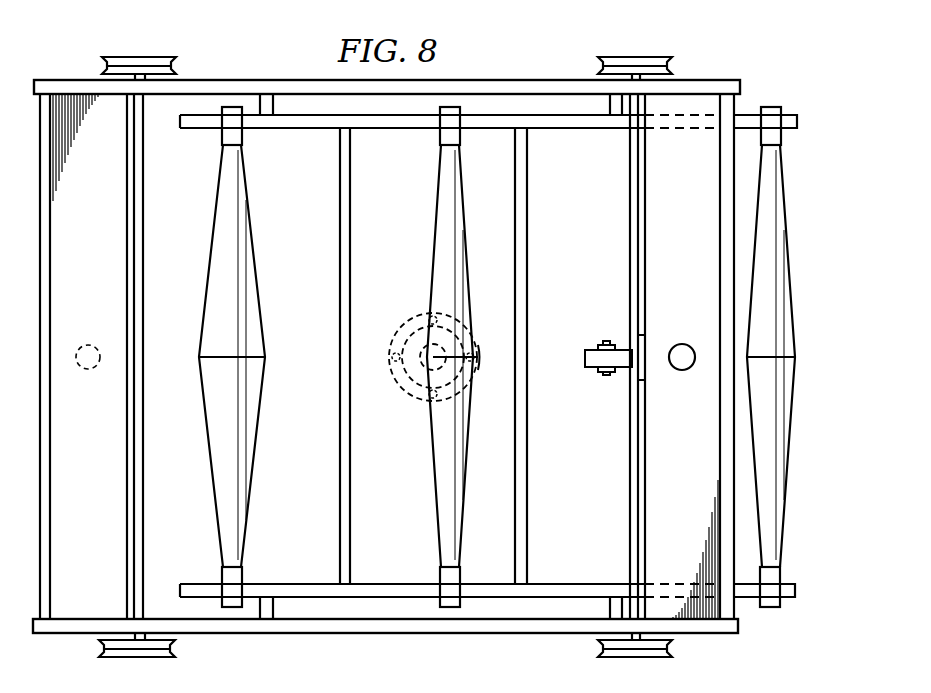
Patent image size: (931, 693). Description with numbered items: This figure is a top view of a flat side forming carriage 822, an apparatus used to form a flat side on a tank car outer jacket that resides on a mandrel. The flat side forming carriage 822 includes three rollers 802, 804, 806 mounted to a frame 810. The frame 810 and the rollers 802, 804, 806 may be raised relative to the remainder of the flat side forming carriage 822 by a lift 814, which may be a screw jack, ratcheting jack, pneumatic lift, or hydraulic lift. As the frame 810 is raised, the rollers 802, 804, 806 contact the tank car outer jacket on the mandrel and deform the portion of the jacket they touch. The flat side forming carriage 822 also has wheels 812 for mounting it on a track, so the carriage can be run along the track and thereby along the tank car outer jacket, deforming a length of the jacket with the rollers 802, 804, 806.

The roller 802 is at (252, 226).
The roller 804 is at (437, 228).
The roller 806 is at (785, 212).
The frame 810 is at (567, 129).
The wheels 812 is at (123, 57).
The lift 814 is at (396, 382).
The flat side forming carriage 822 is at (255, 62).